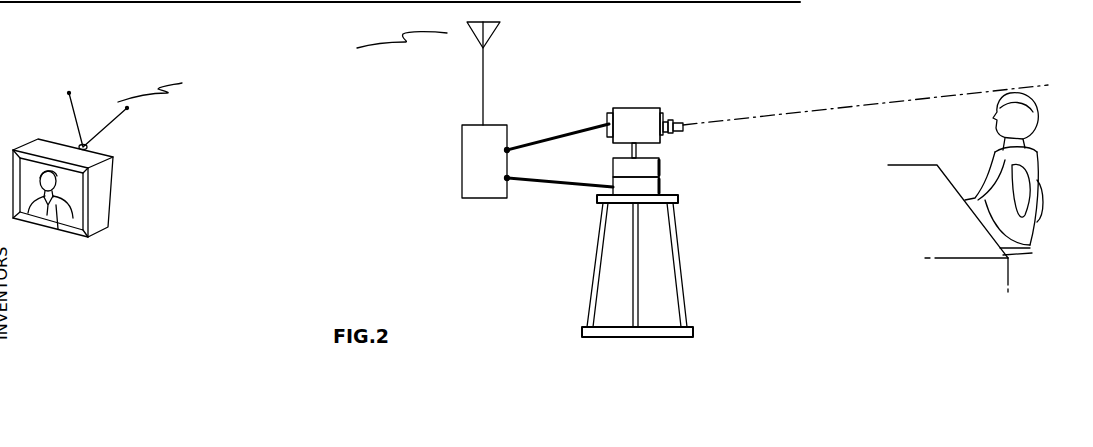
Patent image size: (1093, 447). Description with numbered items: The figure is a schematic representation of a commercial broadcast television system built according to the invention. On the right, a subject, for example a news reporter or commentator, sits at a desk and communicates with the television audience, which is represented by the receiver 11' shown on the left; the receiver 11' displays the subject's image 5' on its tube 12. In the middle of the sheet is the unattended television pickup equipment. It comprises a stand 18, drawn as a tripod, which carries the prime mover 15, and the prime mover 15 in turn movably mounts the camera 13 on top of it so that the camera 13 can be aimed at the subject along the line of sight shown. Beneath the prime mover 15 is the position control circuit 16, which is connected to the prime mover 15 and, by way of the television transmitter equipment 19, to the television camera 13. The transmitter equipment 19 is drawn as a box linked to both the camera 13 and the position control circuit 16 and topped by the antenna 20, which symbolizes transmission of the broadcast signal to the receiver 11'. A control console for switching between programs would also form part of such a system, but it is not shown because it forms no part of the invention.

The tube 12 is at (30, 168).
The receiver 11' is at (134, 175).
The image 5' is at (550, 179).
The camera 13 is at (640, 112).
The prime mover 15 is at (653, 168).
The position control circuit 16 is at (660, 186).
The stand 18 is at (680, 268).
The television transmitter equipment 19 is at (472, 172).
The antenna 20 is at (494, 31).